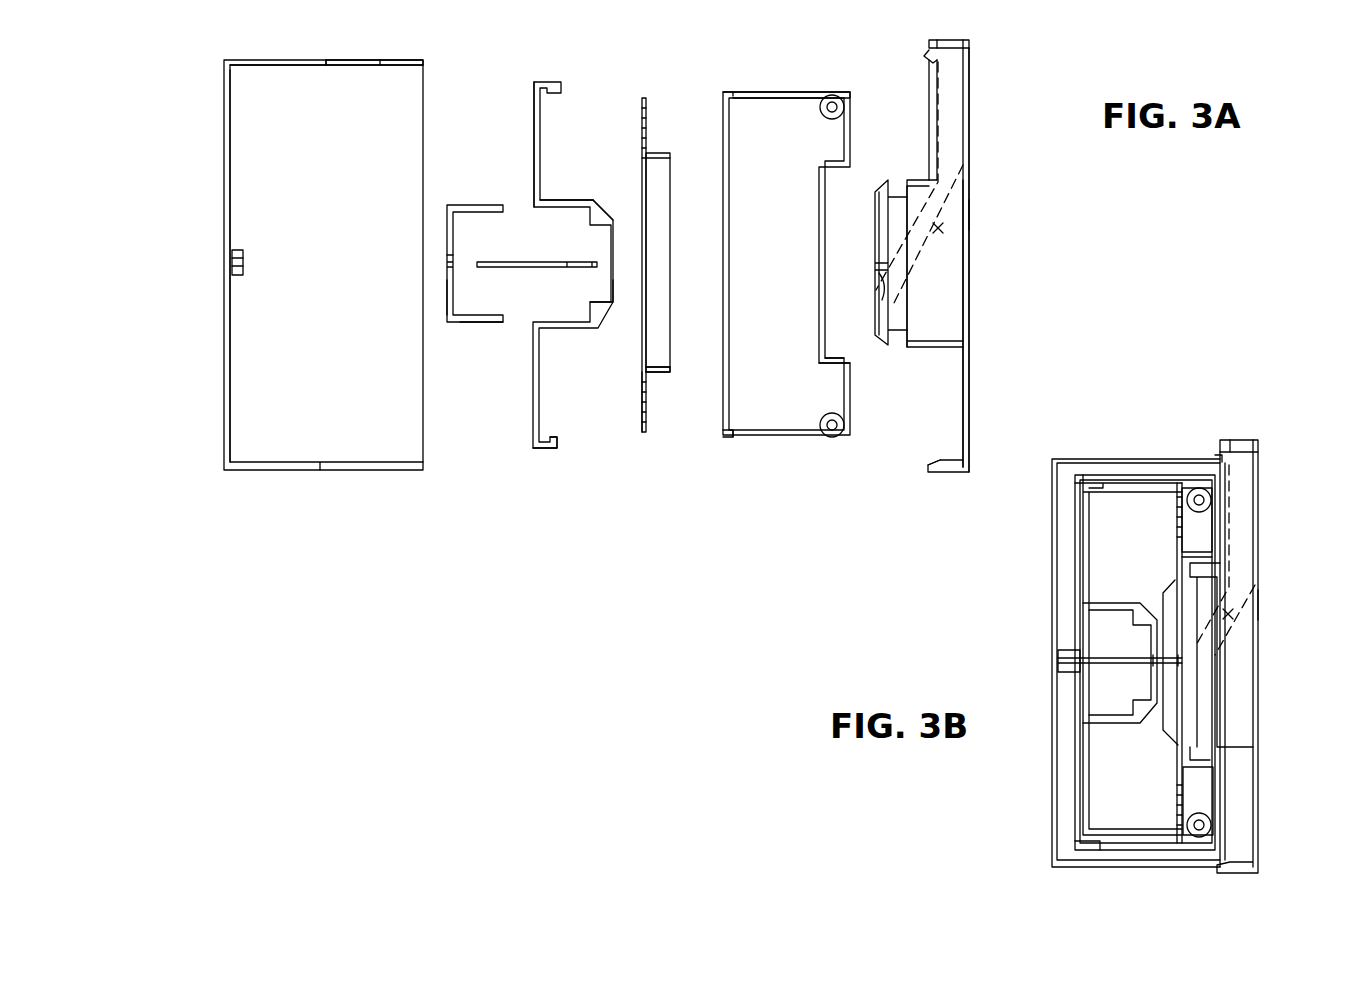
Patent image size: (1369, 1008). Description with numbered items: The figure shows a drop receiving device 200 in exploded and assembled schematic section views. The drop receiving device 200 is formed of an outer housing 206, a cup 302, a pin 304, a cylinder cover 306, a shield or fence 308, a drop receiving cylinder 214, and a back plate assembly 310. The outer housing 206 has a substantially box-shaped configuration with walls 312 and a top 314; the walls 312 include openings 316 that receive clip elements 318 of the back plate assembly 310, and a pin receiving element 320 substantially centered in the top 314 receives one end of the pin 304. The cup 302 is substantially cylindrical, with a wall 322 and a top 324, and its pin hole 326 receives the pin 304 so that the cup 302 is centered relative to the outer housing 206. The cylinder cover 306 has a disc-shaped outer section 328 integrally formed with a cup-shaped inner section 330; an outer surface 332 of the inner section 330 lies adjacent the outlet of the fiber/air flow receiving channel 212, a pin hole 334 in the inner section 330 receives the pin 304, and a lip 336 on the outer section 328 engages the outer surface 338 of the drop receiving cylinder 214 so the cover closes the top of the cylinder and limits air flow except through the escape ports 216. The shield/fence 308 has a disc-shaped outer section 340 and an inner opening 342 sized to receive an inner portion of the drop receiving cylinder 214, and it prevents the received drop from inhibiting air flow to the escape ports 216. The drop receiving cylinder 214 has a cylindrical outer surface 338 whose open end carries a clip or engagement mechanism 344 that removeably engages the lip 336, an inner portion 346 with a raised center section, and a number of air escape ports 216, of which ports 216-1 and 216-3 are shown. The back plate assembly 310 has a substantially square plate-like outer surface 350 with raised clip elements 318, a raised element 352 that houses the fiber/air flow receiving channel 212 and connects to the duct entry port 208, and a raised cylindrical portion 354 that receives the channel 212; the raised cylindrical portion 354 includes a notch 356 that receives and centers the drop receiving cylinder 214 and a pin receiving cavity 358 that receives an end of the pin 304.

In FIG. 3A, the drop receiving device 200 is at (535, 525).
In FIG. 3A, the outer housing 206 is at (283, 470).
In FIG. 3B, the outer housing 206 is at (1052, 570).
In FIG. 3A, the duct entry port 208 is at (970, 48).
In FIG. 3B, the duct entry port 208 is at (1223, 443).
In FIG. 3A, the fiber/air flow receiving channel 212 is at (940, 230).
In FIG. 3B, the fiber/air flow receiving channel 212 is at (1230, 616).
In FIG. 3A, the drop receiving cylinder 214 is at (786, 264).
In FIG. 3B, the drop receiving cylinder 214 is at (1215, 812).
In FIG. 3B, the air escape ports 216 is at (1199, 497).
In FIG. 3A, the air escape port 216-1 is at (844, 108).
In FIG. 3A, the air escape port 216-3 is at (842, 437).
In FIG. 3A, the cup 302 is at (478, 208).
In FIG. 3B, the cup 302 is at (1098, 607).
In FIG. 3A, the pin 304 is at (567, 262).
In FIG. 3B, the pin 304 is at (1150, 658).
In FIG. 3A, the cylinder cover 306 is at (540, 352).
In FIG. 3B, the cylinder cover 306 is at (1090, 568).
In FIG. 3A, the shield or fence 308 is at (645, 141).
In FIG. 3B, the shield or fence 308 is at (1178, 787).
In FIG. 3A, the back plate assembly 310 is at (968, 212).
In FIG. 3B, the back plate assembly 310 is at (1258, 602).
In FIG. 3A, the walls 312 is at (258, 66).
In FIG. 3A, the top 314 is at (231, 346).
In FIG. 3A, the openings 316 is at (362, 61).
In FIG. 3A, the clip elements 318 is at (928, 57).
In FIG. 3A, the pin receiving element 320 is at (243, 262).
In FIG. 3A, the wall 322 is at (483, 321).
In FIG. 3A, the top 324 is at (448, 300).
In FIG. 3A, the pin hole 326 is at (453, 270).
In FIG. 3A, the outer section 328 is at (534, 124).
In FIG. 3A, the inner section 330 is at (578, 200).
In FIG. 3A, the outer surface 332 is at (614, 238).
In FIG. 3A, the pin hole 334 is at (611, 270).
In FIG. 3A, the lip 336 is at (549, 448).
In FIG. 3A, the outer surface 338 is at (800, 92).
In FIG. 3A, the outer section 340 is at (642, 400).
In FIG. 3A, the inner opening 342 is at (652, 371).
In FIG. 3A, the clip or engagement mechanism 344 is at (738, 437).
In FIG. 3A, the inner portion 346 is at (820, 359).
In FIG. 3A, the outer surface 350 is at (968, 378).
In FIG. 3A, the raised element 352 is at (930, 152).
In FIG. 3A, the raised cylindrical portion 354 is at (927, 348).
In FIG. 3B, the raised cylindrical portion 354 is at (1222, 661).
In FIG. 3A, the notch 356 is at (900, 332).
In FIG. 3A, the pin receiving cavity 358 is at (879, 273).